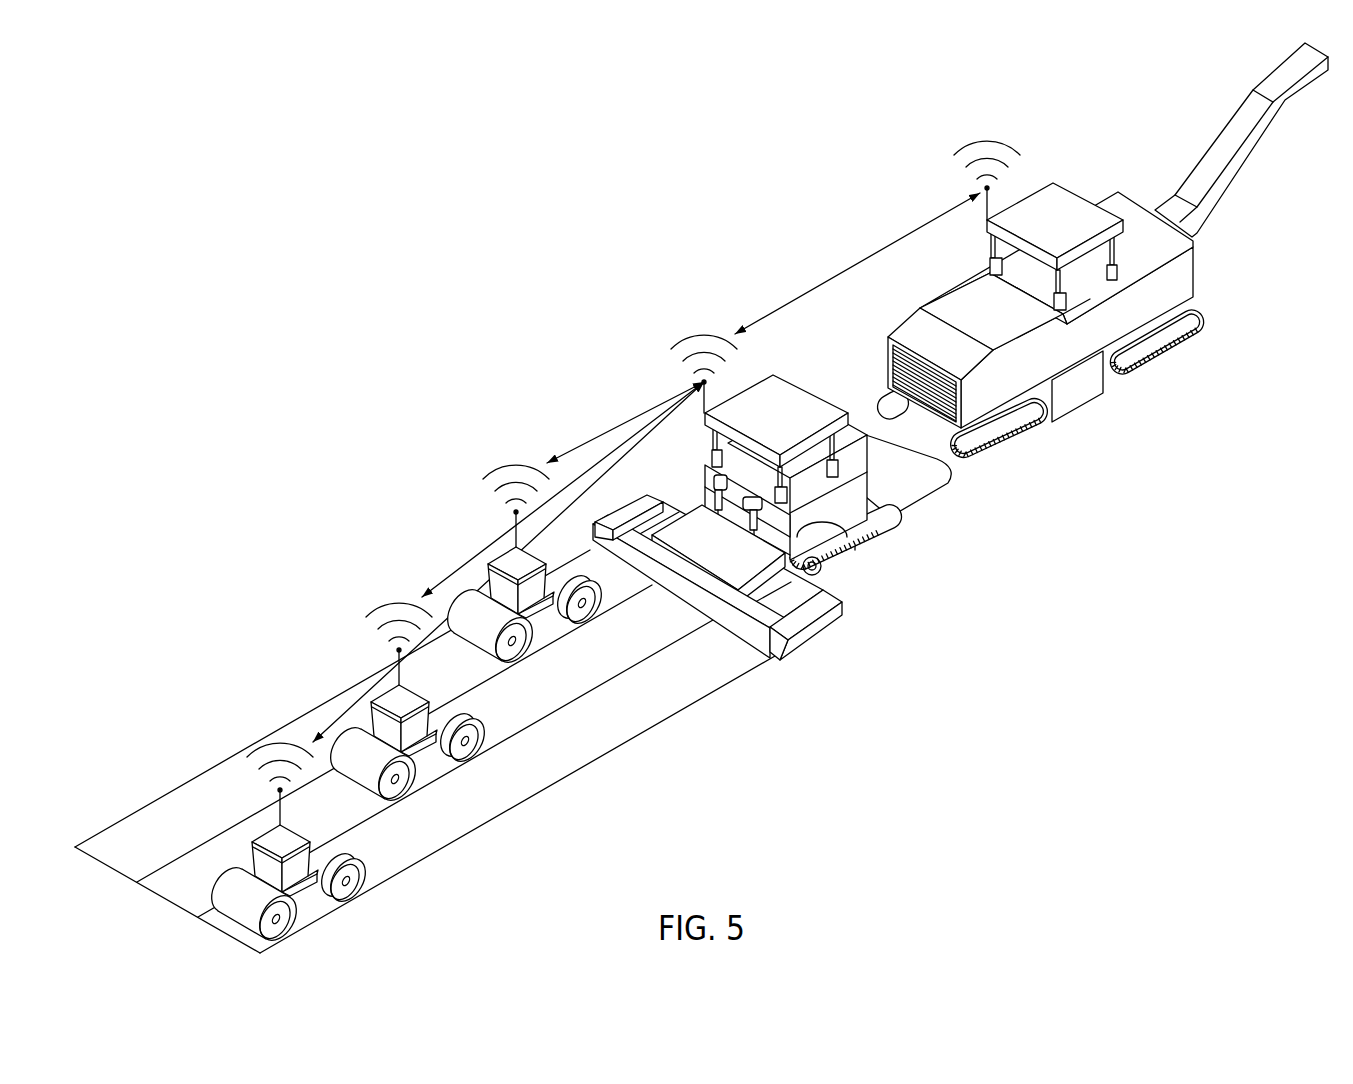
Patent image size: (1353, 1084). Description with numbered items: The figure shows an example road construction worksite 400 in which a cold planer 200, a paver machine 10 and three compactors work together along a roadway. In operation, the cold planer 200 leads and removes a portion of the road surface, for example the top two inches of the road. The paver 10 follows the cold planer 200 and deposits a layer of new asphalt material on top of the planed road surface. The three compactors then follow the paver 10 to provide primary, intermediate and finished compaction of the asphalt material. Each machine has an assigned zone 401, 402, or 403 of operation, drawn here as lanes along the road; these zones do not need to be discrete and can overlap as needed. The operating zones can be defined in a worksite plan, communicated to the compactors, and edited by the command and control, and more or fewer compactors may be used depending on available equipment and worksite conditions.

The paver machine 10 is at (879, 562).
The cold planer 200 is at (1104, 418).
The road construction worksite 400 is at (398, 455).
The zone 401 is at (262, 952).
The zone 402 is at (437, 849).
The zone 403 is at (604, 753).